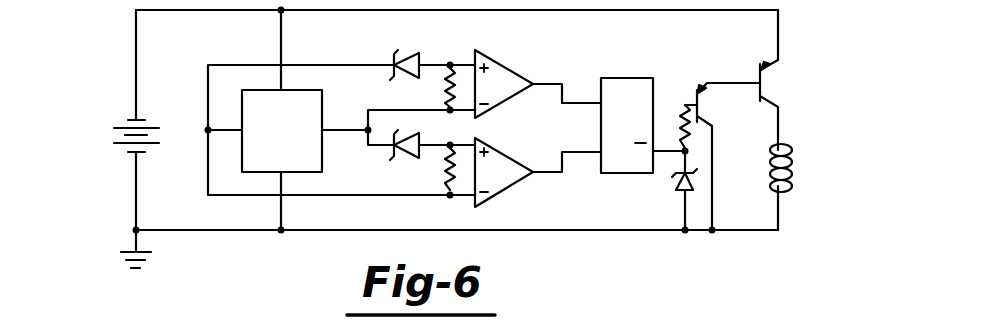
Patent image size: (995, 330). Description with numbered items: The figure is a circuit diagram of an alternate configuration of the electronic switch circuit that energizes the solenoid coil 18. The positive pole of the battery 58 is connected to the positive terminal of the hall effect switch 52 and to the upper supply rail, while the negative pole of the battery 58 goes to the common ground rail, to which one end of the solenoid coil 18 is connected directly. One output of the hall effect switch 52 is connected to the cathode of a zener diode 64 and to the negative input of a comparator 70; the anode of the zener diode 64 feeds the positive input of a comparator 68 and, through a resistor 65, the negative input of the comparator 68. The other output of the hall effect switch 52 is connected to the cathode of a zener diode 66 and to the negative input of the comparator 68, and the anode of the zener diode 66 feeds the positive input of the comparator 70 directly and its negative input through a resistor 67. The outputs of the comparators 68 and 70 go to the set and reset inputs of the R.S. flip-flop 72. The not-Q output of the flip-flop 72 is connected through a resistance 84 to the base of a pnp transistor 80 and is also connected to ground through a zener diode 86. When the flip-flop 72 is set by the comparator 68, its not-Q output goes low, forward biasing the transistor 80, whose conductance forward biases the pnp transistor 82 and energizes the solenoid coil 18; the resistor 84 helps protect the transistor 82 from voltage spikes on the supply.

The solenoid coil 18 is at (794, 172).
The hall effect switch 52 is at (255, 88).
The battery 58 is at (126, 126).
The zener diode 64 is at (396, 56).
The resistor 65 is at (447, 88).
The zener diode 66 is at (393, 150).
The resistor 67 is at (447, 172).
The comparator 68 is at (510, 70).
The comparator 70 is at (500, 195).
The R.S. flip-flop 72 is at (637, 174).
The pnp transistor 80 is at (692, 100).
The pnp transistor 82 is at (760, 100).
The resistance 84 is at (679, 118).
The zener diode 86 is at (697, 185).